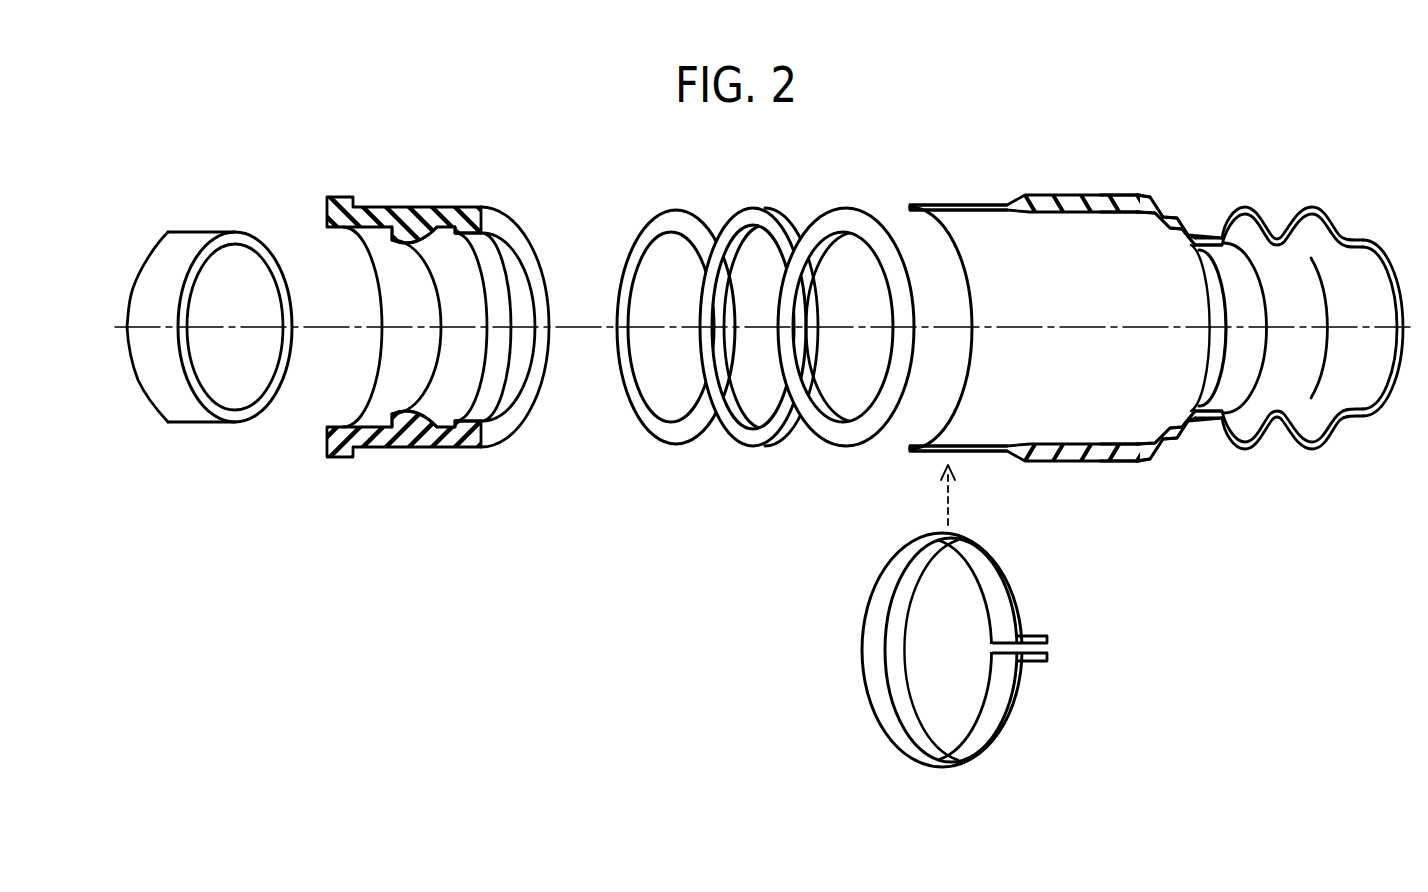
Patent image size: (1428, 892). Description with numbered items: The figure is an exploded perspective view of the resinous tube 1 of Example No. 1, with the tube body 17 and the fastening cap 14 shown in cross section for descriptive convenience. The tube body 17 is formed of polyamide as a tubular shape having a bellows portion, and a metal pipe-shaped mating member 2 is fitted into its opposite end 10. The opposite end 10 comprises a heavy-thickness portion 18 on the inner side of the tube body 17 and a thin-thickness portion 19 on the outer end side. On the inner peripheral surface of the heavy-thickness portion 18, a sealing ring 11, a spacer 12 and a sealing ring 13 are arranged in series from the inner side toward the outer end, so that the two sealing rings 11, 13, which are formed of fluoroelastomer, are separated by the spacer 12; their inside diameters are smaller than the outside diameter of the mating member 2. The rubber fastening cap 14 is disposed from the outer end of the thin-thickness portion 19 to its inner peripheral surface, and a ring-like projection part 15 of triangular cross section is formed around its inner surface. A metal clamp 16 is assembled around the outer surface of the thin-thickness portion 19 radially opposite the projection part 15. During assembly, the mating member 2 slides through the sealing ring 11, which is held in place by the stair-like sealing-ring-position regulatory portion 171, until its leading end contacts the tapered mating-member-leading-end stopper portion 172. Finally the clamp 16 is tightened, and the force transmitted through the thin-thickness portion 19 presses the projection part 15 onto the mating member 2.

The resinous tube 1 is at (1156, 270).
The mating member 2 is at (199, 243).
The opposite end 10 is at (1058, 205).
The sealing ring 11 is at (847, 225).
The spacer 12 is at (772, 217).
The sealing ring 13 is at (675, 225).
The fastening cap 14 is at (392, 214).
The projection part 15 is at (438, 228).
The clamp 16 is at (877, 633).
The tube body 17 is at (1270, 294).
The sealing-ring-position regulatory portion 171 is at (1156, 212).
The mating-member-leading-end stopper portion 172 is at (1187, 230).
The heavy-thickness portion 18 is at (1122, 205).
The thin-thickness portion 19 is at (962, 203).